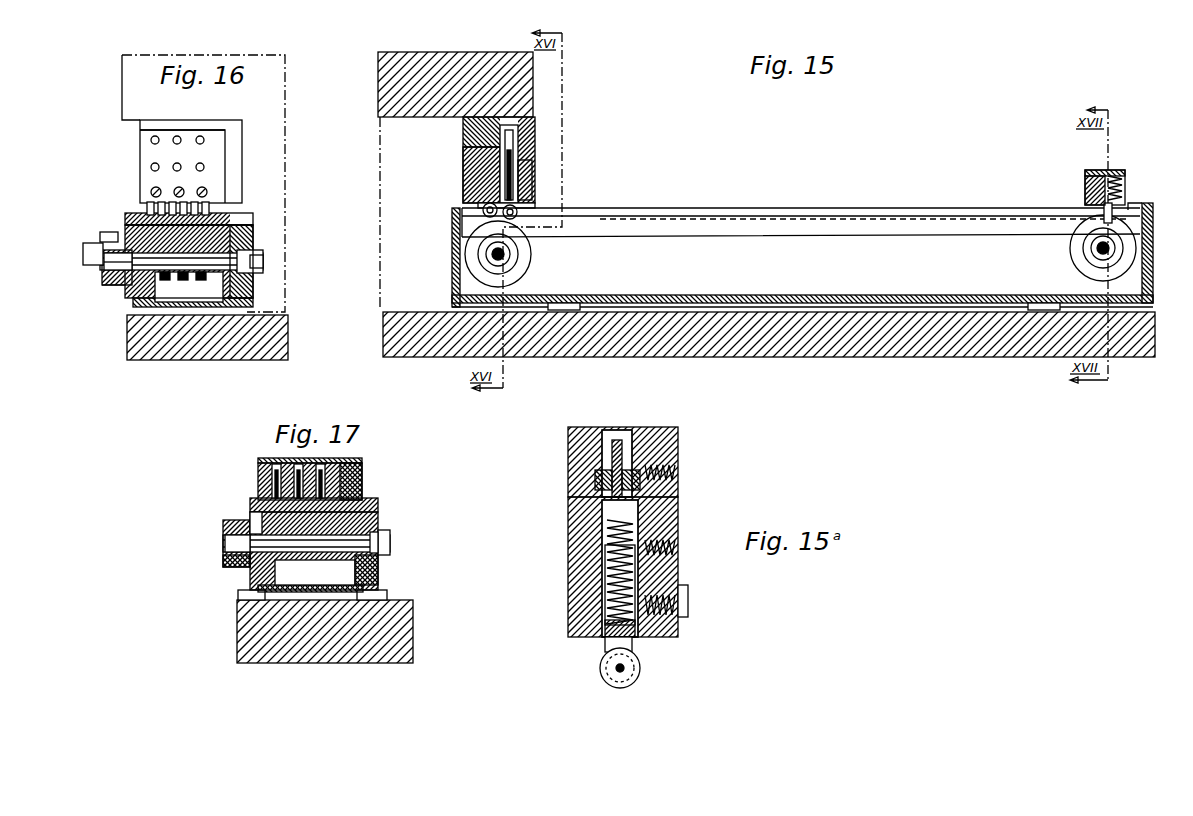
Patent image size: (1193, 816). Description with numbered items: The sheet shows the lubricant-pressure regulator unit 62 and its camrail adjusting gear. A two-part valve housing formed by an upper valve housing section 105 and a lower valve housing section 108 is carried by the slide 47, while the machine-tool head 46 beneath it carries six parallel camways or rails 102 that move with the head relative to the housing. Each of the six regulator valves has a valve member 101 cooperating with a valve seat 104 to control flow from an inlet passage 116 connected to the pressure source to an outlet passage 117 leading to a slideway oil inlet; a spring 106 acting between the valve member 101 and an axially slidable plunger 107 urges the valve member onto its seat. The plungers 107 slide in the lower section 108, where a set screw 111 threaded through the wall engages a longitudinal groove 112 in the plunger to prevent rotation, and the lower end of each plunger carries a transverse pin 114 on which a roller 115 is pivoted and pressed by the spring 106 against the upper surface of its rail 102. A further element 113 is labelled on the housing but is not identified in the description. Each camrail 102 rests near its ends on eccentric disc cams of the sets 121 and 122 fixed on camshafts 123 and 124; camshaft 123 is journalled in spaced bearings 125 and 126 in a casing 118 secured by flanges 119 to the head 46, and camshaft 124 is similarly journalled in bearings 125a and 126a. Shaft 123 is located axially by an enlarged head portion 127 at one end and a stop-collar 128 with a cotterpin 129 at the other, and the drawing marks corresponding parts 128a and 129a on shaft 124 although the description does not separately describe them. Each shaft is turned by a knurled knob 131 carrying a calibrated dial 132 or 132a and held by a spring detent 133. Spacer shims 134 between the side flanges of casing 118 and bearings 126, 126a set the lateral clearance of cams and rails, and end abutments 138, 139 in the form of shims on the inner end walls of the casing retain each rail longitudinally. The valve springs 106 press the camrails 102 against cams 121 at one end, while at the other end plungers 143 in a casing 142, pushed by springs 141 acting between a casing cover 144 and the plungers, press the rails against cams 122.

In FIG. 15, the machine-tool head 46 is at (428, 318).
In FIG. 16, the machine-tool head 46 is at (128, 333).
In FIG. 17, the machine-tool head 46 is at (237, 607).
In FIG. 15, the slide 47 is at (533, 100).
In FIG. 16, the slide 47 is at (132, 93).
In FIG. 15, the regulator unit 62 is at (842, 196).
In FIG. 15, the valve member 101 is at (513, 145).
In FIG. 15A, the valve member 101 is at (660, 515).
In FIG. 15, the camrail 102 is at (651, 228).
In FIG. 16, the camrail 102 is at (157, 217).
In FIG. 17, the camrail 102 is at (377, 517).
In FIG. 15A, the valve seat 104 is at (673, 492).
In FIG. 15, the upper valve housing section 105 is at (535, 127).
In FIG. 16, the upper valve housing section 105 is at (213, 127).
In FIG. 15A, the upper valve housing section 105 is at (678, 437).
In FIG. 15, the spring 106 is at (500, 151).
In FIG. 15A, the spring 106 is at (675, 572).
In FIG. 15, the plunger 107 is at (493, 193).
In FIG. 15A, the plunger 107 is at (665, 635).
In FIG. 15, the lower valve housing section 108 is at (535, 167).
In FIG. 16, the lower valve housing section 108 is at (145, 177).
In FIG. 15A, the lower valve housing section 108 is at (675, 515).
In FIG. 15A, the set screw 111 is at (688, 592).
In FIG. 15A, the longitudinal groove 112 is at (677, 612).
In FIG. 16, the screws 113 is at (204, 188).
In FIG. 15A, the transverse pin 114 is at (637, 648).
In FIG. 15, the roller 115 is at (537, 203).
In FIG. 15A, the roller 115 is at (640, 678).
In FIG. 16, the inlet passage 116 is at (200, 136).
In FIG. 15A, the inlet passage 116 is at (675, 472).
In FIG. 16, the outlet passage 117 is at (200, 163).
In FIG. 15A, the outlet passage 117 is at (675, 547).
In FIG. 15, the casing 118 is at (452, 230).
In FIG. 16, the casing 118 is at (200, 305).
In FIG. 17, the casing 118 is at (312, 592).
In FIG. 17, the flanges 119 is at (242, 593).
In FIG. 15, the cams 121 is at (478, 262).
In FIG. 16, the cams 121 is at (207, 281).
In FIG. 15, the cams 122 is at (1088, 263).
In FIG. 15, the camshaft 123 is at (486, 254).
In FIG. 16, the camshaft 123 is at (110, 284).
In FIG. 15, the camshaft 124 is at (1091, 251).
In FIG. 17, the camshaft 124 is at (223, 542).
In FIG. 16, the bearing 125 is at (127, 227).
In FIG. 17, the bearing 125a is at (225, 567).
In FIG. 16, the bearing 126 is at (253, 242).
In FIG. 17, the bearing 126a is at (370, 562).
In FIG. 16, the enlarged head portion 127 is at (100, 274).
In FIG. 16, the stop-collar 128 is at (262, 270).
In FIG. 17, the nut 128a is at (380, 543).
In FIG. 16, the cotterpin 129 is at (263, 260).
In FIG. 17, the shaft end 129a is at (388, 538).
In FIG. 16, the knurled knob 131 is at (112, 289).
In FIG. 16, the calibrated dial 132 is at (108, 234).
In FIG. 17, the calibrated dial 132a is at (250, 515).
In FIG. 16, the spring detent 133 is at (91, 250).
In FIG. 16, the spacer shims 134 is at (252, 218).
In FIG. 17, the spacer shims 134 is at (378, 502).
In FIG. 15, the end abutment 138 is at (480, 205).
In FIG. 15, the end abutment 139 is at (1140, 203).
In FIG. 15, the springs 141 is at (1085, 177).
In FIG. 17, the springs 141 is at (363, 463).
In FIG. 15, the casing 142 is at (1125, 180).
In FIG. 15, the plungers 143 is at (1085, 190).
In FIG. 17, the plungers 143 is at (342, 487).
In FIG. 15, the casing cover 144 is at (1092, 170).
In FIG. 17, the casing cover 144 is at (258, 460).